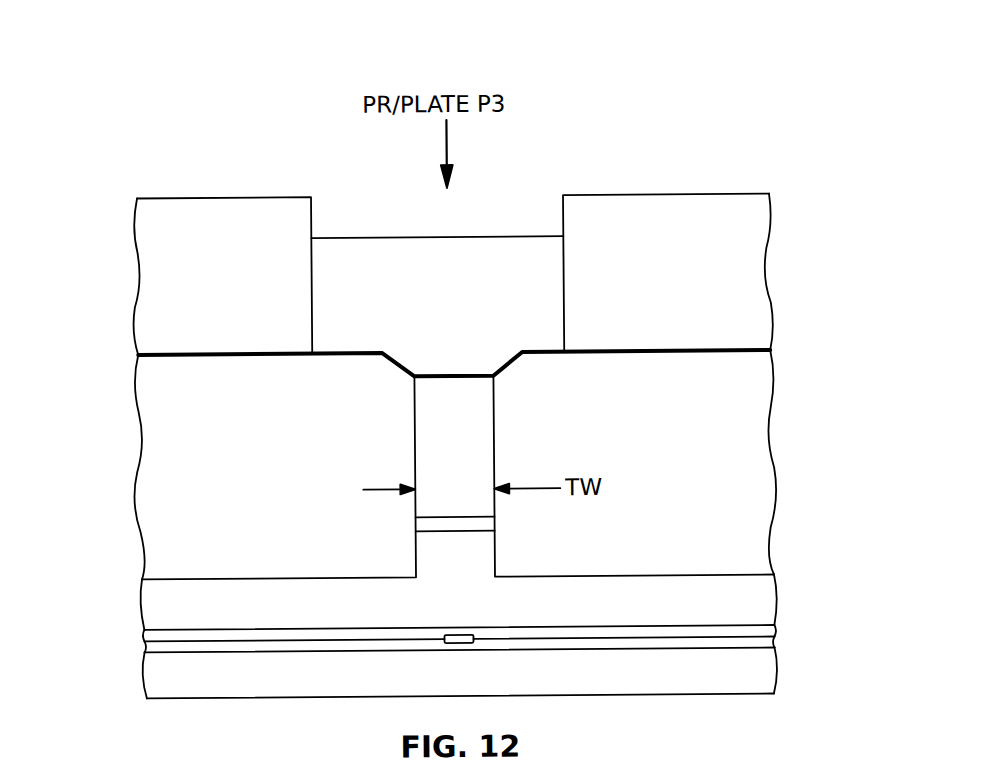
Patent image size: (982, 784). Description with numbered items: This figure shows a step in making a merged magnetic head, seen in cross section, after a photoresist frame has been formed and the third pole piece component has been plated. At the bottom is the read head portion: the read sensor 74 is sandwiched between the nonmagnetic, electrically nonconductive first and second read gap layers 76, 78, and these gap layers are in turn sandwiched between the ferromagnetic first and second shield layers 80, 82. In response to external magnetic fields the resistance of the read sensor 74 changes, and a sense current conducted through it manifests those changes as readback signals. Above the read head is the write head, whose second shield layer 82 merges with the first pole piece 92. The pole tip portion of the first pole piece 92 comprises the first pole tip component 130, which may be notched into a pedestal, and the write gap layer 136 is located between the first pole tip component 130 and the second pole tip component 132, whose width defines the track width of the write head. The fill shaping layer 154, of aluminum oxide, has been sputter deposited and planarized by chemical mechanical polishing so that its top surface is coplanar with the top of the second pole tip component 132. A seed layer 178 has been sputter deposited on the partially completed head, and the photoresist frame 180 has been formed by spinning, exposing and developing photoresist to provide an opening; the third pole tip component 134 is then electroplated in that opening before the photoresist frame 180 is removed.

The read sensor 74 is at (455, 643).
The first read gap layer 76 is at (628, 645).
The second read gap layer 78 is at (680, 634).
The first shield layer 80 is at (223, 683).
The second shield layer 82 is at (293, 614).
The first pole piece 92 is at (275, 576).
The first pole tip component 130 is at (485, 554).
The second pole tip component 132 is at (420, 440).
The third pole tip component 134 is at (376, 248).
The write gap layer 136 is at (420, 524).
The fill shaping layer 154 is at (155, 459).
The seed layer 178 is at (180, 352).
The photoresist frame 180 is at (152, 247).